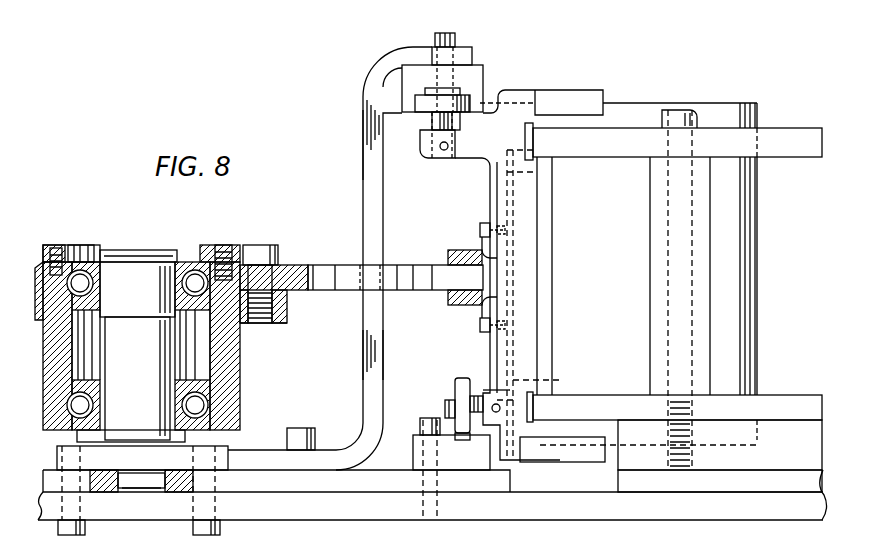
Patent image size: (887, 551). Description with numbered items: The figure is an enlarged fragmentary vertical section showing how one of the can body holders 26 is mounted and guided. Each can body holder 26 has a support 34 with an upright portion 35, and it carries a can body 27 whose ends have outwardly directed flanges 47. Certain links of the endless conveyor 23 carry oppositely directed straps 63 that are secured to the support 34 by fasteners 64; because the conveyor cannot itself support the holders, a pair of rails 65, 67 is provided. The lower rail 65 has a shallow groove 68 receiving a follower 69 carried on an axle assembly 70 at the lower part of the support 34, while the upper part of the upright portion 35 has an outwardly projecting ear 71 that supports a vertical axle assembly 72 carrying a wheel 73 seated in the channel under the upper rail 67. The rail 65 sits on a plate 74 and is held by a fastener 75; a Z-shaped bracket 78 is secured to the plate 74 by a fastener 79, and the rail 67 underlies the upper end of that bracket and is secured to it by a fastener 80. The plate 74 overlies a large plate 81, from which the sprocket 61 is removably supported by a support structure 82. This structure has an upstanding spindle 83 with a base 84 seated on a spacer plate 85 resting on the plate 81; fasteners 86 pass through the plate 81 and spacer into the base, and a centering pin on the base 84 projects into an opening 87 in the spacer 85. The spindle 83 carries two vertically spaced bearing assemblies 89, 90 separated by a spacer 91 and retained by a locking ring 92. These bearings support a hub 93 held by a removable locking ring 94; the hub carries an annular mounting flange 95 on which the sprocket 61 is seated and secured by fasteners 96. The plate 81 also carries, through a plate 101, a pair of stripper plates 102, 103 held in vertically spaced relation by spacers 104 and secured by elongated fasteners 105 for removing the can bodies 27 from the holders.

The endless conveyor 23 is at (448, 302).
The can body holder 26 is at (528, 252).
The can body 27 is at (760, 230).
The support 34 is at (479, 194).
The upright portion 35 is at (488, 167).
The outwardly directed flange 47 is at (757, 103).
The sprocket 61 is at (320, 272).
The strap 63 is at (482, 246).
The fastener 64 is at (480, 228).
The rail 65 is at (413, 458).
The rail 67 is at (484, 76).
The shallow groove 68 is at (461, 440).
The follower 69 is at (455, 386).
The axle assembly 70 is at (447, 408).
The ear 71 is at (425, 162).
The vertical axle assembly 72 is at (432, 122).
The wheel 73 is at (365, 112).
The plate 74 is at (418, 60).
The fastener 75 is at (426, 428).
The Z-shaped bracket 78 is at (364, 344).
The fastener 79 is at (314, 431).
The fastener 80 is at (449, 33).
The large plate 81 is at (278, 500).
The support structure 82 is at (230, 240).
The spindle 83 is at (158, 250).
The base 84 is at (226, 452).
The spacer plate 85 is at (228, 480).
The fastener 86 is at (145, 480).
The opening 87 is at (95, 478).
The bearing assembly 89 is at (107, 385).
The bearing assembly 90 is at (182, 304).
The spacer 91 is at (178, 360).
The locking ring 92 is at (93, 248).
The hub 93 is at (232, 360).
The locking ring 94 is at (62, 250).
The annular mounting flange 95 is at (290, 314).
The fastener 96 is at (276, 250).
The plate 101 is at (725, 488).
The stripper plate 102 is at (612, 393).
The stripper plate 103 is at (583, 158).
The spacer 104 is at (657, 293).
The elongated fastener 105 is at (685, 110).